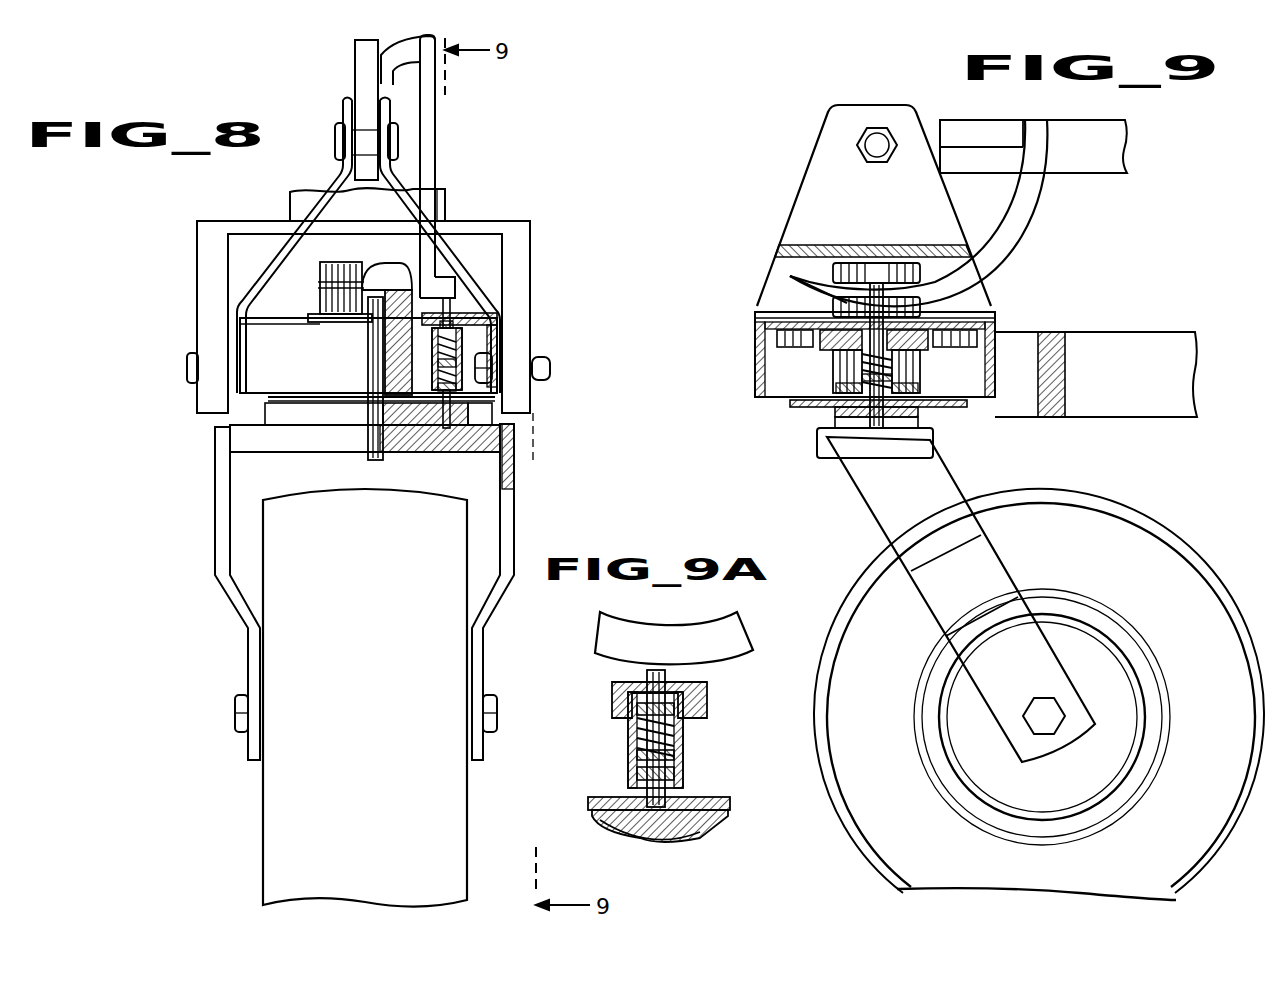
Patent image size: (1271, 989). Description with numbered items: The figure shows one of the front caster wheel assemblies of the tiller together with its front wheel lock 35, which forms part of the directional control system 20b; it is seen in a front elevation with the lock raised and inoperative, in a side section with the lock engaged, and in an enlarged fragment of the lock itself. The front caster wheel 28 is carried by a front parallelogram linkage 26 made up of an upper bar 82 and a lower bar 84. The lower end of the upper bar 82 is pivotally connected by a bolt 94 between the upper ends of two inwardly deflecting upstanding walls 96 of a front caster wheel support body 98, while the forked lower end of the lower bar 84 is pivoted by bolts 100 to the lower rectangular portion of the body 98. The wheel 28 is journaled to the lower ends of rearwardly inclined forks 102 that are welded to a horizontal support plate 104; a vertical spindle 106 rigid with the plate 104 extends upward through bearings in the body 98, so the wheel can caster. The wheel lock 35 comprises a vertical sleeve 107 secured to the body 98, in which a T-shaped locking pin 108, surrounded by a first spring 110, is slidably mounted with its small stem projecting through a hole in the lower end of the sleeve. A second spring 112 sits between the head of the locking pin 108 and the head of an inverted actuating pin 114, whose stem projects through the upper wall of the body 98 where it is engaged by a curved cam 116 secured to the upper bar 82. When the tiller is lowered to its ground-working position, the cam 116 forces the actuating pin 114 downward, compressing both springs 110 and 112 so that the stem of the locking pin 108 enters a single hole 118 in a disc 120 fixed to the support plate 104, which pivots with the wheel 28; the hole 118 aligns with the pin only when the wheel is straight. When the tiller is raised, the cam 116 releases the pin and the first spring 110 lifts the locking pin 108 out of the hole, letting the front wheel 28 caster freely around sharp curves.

In FIG. 8, the directional control system 20b is at (545, 238).
In FIG. 9, the directional control system 20b is at (1058, 203).
In FIG. 9, the front parallelogram linkage 26 is at (1123, 324).
In FIG. 8, the front caster wheel 28 is at (385, 668).
In FIG. 9, the front caster wheel 28 is at (1194, 619).
In FIG. 8, the front wheel lock 35 is at (472, 308).
In FIG. 9, the front wheel lock 35 is at (877, 297).
In FIG. 9A, the front wheel lock 35 is at (610, 729).
In FIG. 8, the upper bar 82 is at (355, 61).
In FIG. 9, the upper bar 82 is at (1127, 151).
In FIG. 8, the lower bar 84 is at (520, 256).
In FIG. 9, the lower bar 84 is at (1197, 357).
In FIG. 8, the bolt 94 is at (398, 133).
In FIG. 9, the bolt 94 is at (877, 150).
In FIG. 8, the upstanding walls 96 is at (408, 207).
In FIG. 9, the upstanding walls 96 is at (898, 197).
In FIG. 8, the front caster wheel support body 98 is at (290, 375).
In FIG. 9, the front caster wheel support body 98 is at (755, 364).
In FIG. 9A, the front caster wheel support body 98 is at (700, 830).
In FIG. 8, the bolts 100 is at (188, 368).
In FIG. 8, the forks 102 is at (215, 516).
In FIG. 9, the forks 102 is at (985, 553).
In FIG. 8, the horizontal support plate 104 is at (423, 462).
In FIG. 9, the horizontal support plate 104 is at (817, 446).
In FIG. 8, the vertical spindle 106 is at (370, 412).
In FIG. 8, the vertical sleeve 107 is at (470, 356).
In FIG. 9, the vertical sleeve 107 is at (892, 378).
In FIG. 9A, the vertical sleeve 107 is at (637, 754).
In FIG. 8, the locking pin 108 is at (470, 321).
In FIG. 9, the locking pin 108 is at (880, 333).
In FIG. 9A, the locking pin 108 is at (665, 675).
In FIG. 8, the first spring 110 is at (460, 392).
In FIG. 9, the first spring 110 is at (838, 382).
In FIG. 9A, the first spring 110 is at (637, 774).
In FIG. 8, the second spring 112 is at (470, 339).
In FIG. 9, the second spring 112 is at (833, 362).
In FIG. 9A, the second spring 112 is at (683, 730).
In FIG. 8, the actuating pin 114 is at (473, 407).
In FIG. 9, the actuating pin 114 is at (875, 406).
In FIG. 9A, the actuating pin 114 is at (678, 770).
In FIG. 8, the curved cam 116 is at (453, 289).
In FIG. 9, the curved cam 116 is at (787, 277).
In FIG. 9A, the curved cam 116 is at (600, 645).
In FIG. 8, the hole 118 is at (425, 453).
In FIG. 9A, the hole 118 is at (655, 830).
In FIG. 8, the disc 120 is at (372, 438).
In FIG. 9, the disc 120 is at (790, 404).
In FIG. 9A, the disc 120 is at (715, 798).